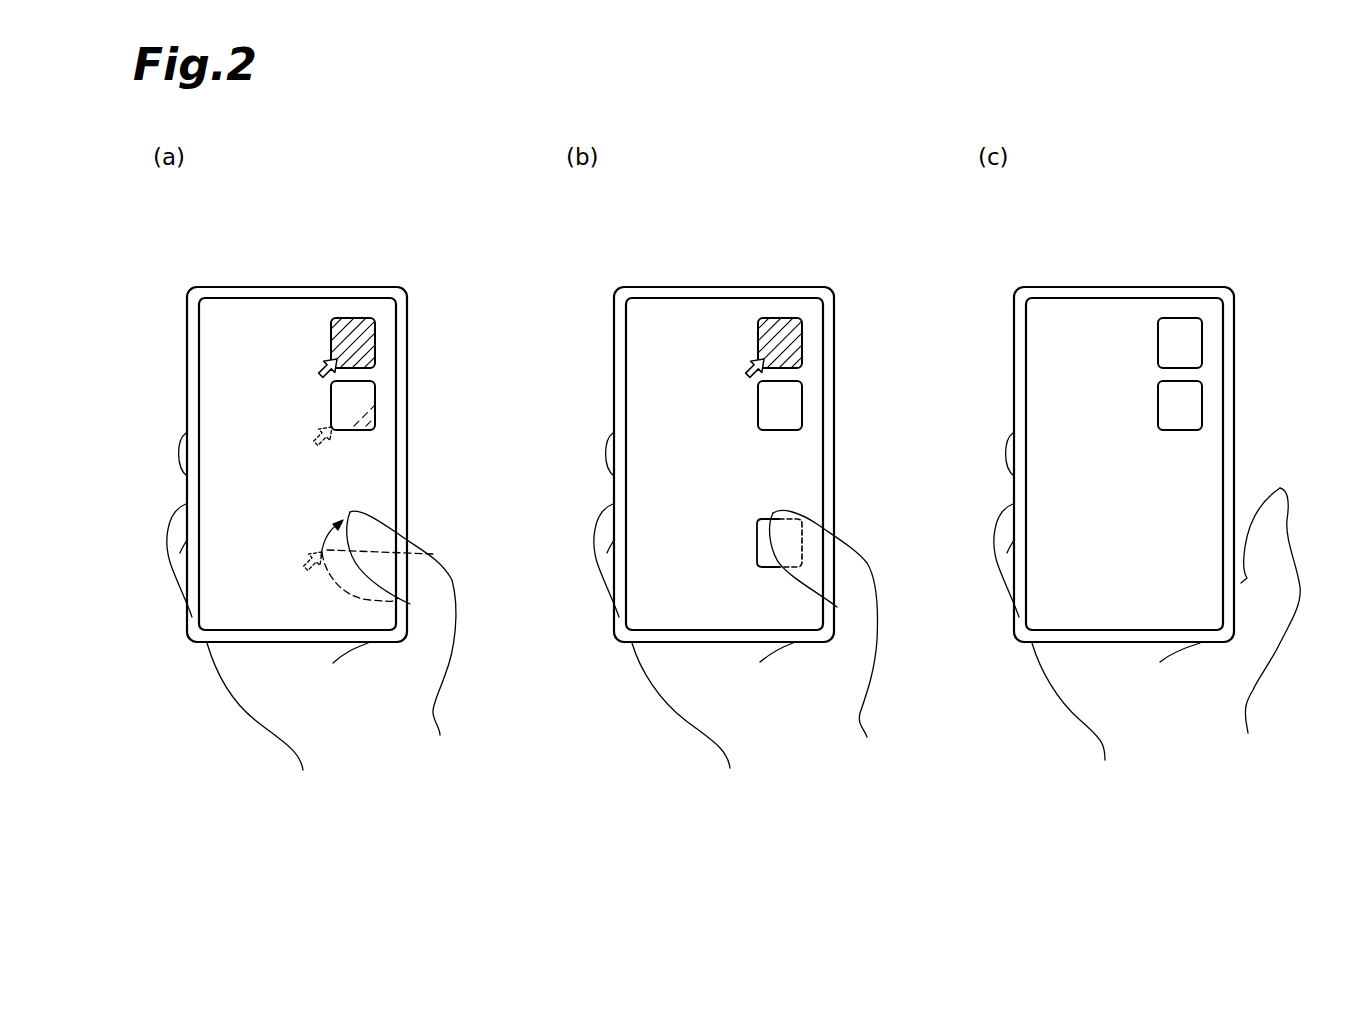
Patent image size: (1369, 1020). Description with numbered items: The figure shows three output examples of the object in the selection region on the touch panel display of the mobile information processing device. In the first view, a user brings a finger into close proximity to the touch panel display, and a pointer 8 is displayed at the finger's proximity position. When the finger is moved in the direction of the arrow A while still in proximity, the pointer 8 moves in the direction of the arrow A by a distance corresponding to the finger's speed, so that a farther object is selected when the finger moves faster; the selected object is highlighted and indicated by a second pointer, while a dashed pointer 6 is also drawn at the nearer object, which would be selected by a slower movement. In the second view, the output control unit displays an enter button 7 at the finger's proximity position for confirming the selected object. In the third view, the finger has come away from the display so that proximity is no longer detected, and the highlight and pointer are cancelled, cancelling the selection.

The moved cursor position 6 is at (318, 438).
The enter button 7 is at (757, 542).
The pointer 8 is at (303, 574).
The arrow A is at (323, 548).